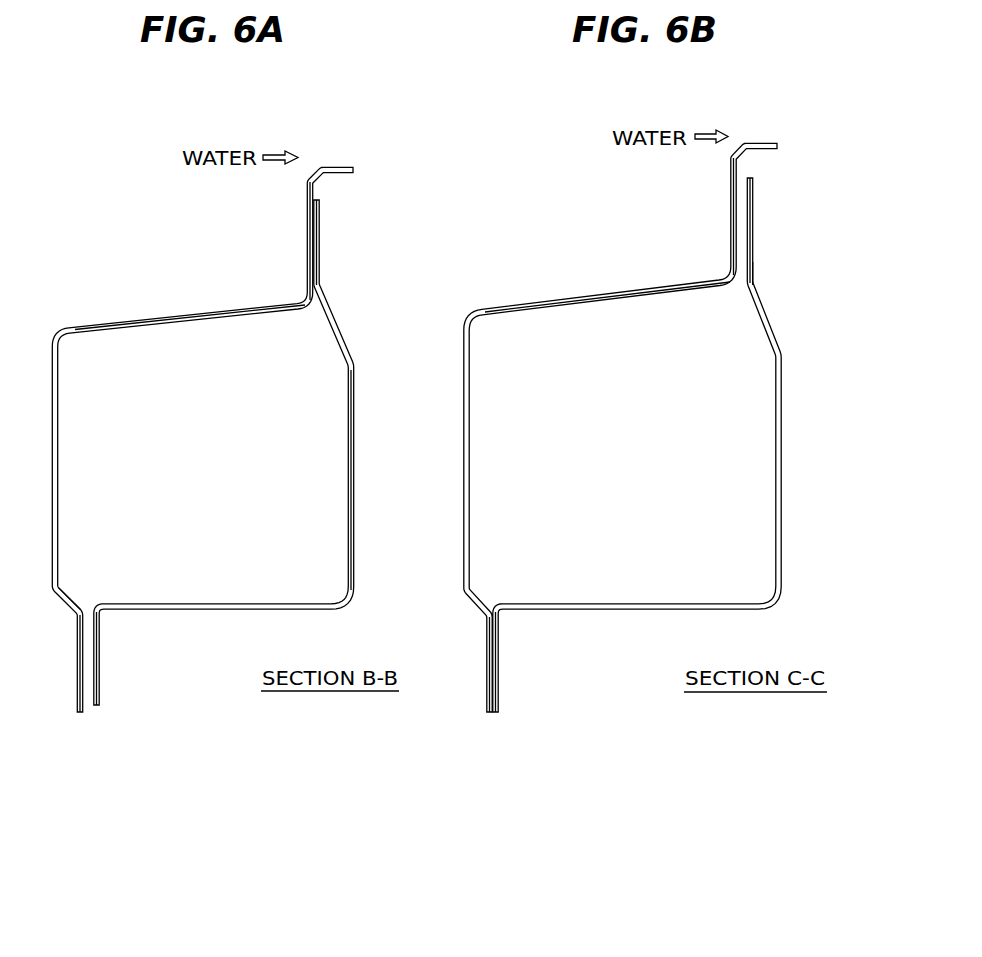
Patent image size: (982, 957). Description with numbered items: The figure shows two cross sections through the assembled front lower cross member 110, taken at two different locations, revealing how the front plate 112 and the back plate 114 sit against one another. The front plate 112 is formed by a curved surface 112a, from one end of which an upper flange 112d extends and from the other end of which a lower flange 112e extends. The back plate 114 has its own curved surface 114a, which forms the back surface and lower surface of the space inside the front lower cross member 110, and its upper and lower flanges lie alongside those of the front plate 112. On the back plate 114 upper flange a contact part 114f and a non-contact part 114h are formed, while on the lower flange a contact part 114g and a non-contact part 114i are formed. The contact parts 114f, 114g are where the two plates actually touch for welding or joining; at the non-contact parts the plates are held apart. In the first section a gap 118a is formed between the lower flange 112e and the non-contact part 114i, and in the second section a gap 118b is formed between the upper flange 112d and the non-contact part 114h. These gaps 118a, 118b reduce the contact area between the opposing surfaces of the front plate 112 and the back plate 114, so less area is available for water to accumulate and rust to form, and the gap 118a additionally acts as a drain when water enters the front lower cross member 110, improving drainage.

In FIG. 6A, the front lower cross member 110 is at (225, 504).
In FIG. 6B, the front lower cross member 110 is at (620, 427).
In FIG. 6A, the front plate 112 is at (189, 481).
In FIG. 6B, the front plate 112 is at (590, 427).
In FIG. 6A, the back plate 114 is at (255, 497).
In FIG. 6B, the back plate 114 is at (665, 445).
In FIG. 6A, the curved surface 112a is at (143, 319).
In FIG. 6B, the curved surface 112a is at (593, 295).
In FIG. 6A, the upper flange 112d is at (307, 219).
In FIG. 6B, the upper flange 112d is at (730, 195).
In FIG. 6A, the lower flange 112e is at (75, 678).
In FIG. 6B, the lower flange 112e is at (487, 645).
In FIG. 6A, the curved surface 114a is at (354, 420).
In FIG. 6A, the contact part 114f is at (320, 235).
In FIG. 6B, the contact part 114g is at (500, 655).
In FIG. 6B, the non-contact part 114h is at (755, 208).
In FIG. 6A, the non-contact part 114i is at (105, 682).
In FIG. 6A, the gap 118a is at (43, 552).
In FIG. 6B, the gap 118b is at (741, 266).